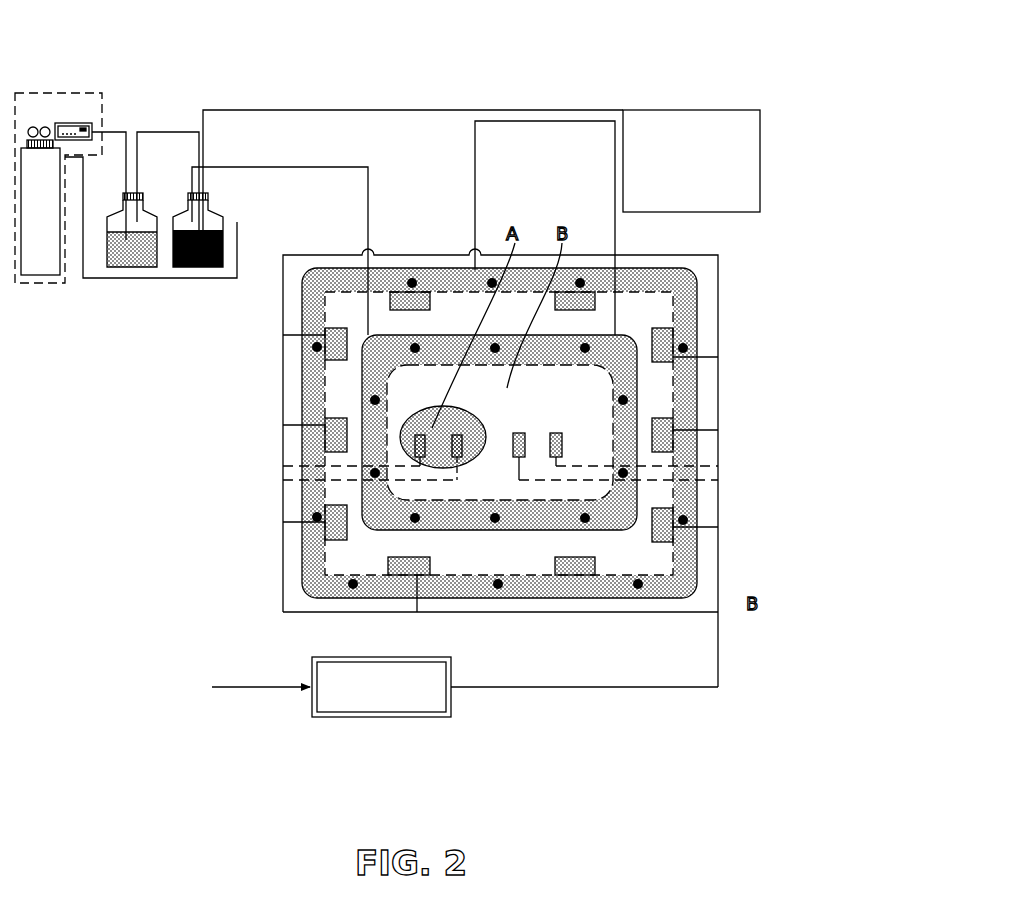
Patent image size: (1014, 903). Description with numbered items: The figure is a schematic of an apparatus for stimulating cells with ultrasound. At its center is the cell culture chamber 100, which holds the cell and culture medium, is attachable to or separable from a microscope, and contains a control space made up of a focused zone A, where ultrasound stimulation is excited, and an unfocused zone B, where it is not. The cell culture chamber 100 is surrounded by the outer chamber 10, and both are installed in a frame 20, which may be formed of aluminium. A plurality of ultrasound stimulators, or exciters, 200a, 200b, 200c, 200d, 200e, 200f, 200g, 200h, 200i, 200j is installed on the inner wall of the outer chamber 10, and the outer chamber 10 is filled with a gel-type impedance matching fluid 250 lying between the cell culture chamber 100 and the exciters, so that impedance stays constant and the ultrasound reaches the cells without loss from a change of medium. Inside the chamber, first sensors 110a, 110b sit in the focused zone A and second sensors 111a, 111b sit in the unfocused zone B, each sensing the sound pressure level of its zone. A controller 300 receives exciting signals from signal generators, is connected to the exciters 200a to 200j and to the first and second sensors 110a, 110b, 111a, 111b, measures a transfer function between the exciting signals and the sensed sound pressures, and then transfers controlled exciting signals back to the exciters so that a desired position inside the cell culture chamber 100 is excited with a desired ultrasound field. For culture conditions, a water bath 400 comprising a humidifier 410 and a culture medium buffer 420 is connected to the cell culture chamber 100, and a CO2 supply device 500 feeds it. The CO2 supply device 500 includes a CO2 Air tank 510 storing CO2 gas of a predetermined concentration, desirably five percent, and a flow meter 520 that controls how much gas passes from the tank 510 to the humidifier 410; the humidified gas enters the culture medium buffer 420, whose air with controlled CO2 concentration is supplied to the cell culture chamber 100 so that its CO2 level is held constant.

The outer chamber 10 is at (683, 315).
The frame 20 is at (697, 545).
The cell culture chamber 100 is at (402, 418).
The first sensor 110a is at (412, 447).
The first sensor 110b is at (455, 450).
The second sensor 111a is at (520, 432).
The second sensor 111b is at (562, 445).
The ultrasound stimulator (exciter) 200a is at (592, 302).
The ultrasound stimulator (exciter) 200b is at (693, 335).
The ultrasound stimulator (exciter) 200c is at (665, 427).
The ultrasound stimulator (exciter) 200d is at (675, 527).
The ultrasound stimulator (exciter) 200e is at (580, 575).
The ultrasound stimulator (exciter) 200f is at (395, 572).
The ultrasound stimulator (exciter) 200g is at (322, 525).
The ultrasound stimulator (exciter) 200h is at (328, 425).
The ultrasound stimulator (exciter) 200i is at (333, 330).
The ultrasound stimulator (exciter) 200j is at (425, 273).
The impedance matching fluid 250 is at (663, 385).
The controller 300 is at (378, 717).
The water bath 400 is at (107, 278).
The humidifier 410 is at (118, 207).
The culture medium buffer 420 is at (185, 207).
The CO2 supply device 500 is at (42, 92).
The CO2 Air tank 510 is at (38, 277).
The flow meter 520 is at (78, 121).